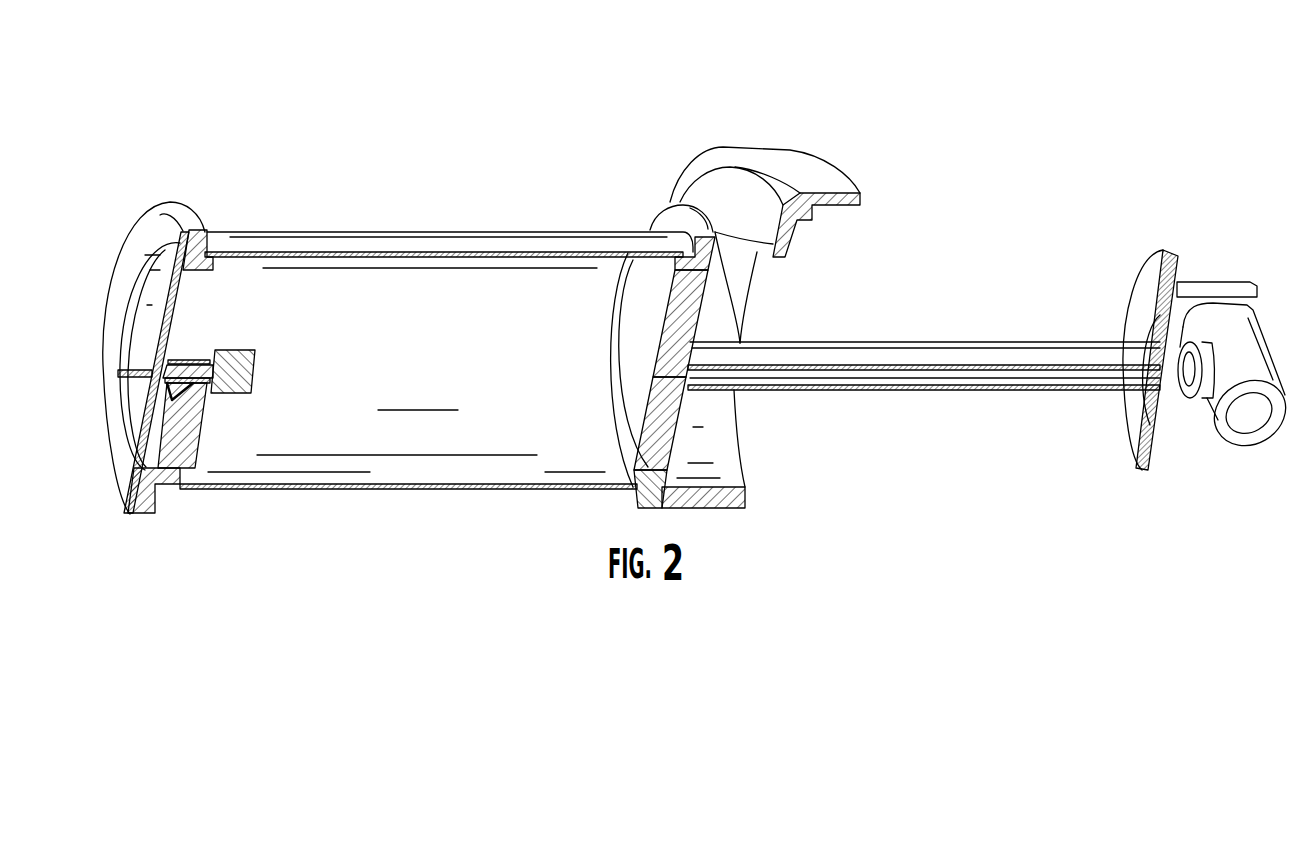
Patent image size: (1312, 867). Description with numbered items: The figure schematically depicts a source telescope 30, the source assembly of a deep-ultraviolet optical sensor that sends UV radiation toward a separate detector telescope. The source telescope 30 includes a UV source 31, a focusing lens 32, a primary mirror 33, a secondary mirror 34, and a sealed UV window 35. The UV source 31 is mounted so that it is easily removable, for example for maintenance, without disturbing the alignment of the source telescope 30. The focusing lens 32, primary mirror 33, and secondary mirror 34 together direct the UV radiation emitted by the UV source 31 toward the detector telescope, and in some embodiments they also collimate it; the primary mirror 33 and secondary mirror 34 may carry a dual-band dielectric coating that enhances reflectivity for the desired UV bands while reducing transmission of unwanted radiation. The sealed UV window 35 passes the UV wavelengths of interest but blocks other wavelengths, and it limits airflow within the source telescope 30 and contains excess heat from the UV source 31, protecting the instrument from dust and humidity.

The source telescope 30 is at (842, 115).
The UV source 31 is at (1252, 345).
The focusing lens 32 is at (1142, 353).
The primary mirror 33 is at (652, 295).
The secondary mirror 34 is at (242, 368).
The sealed UV window 35 is at (152, 290).